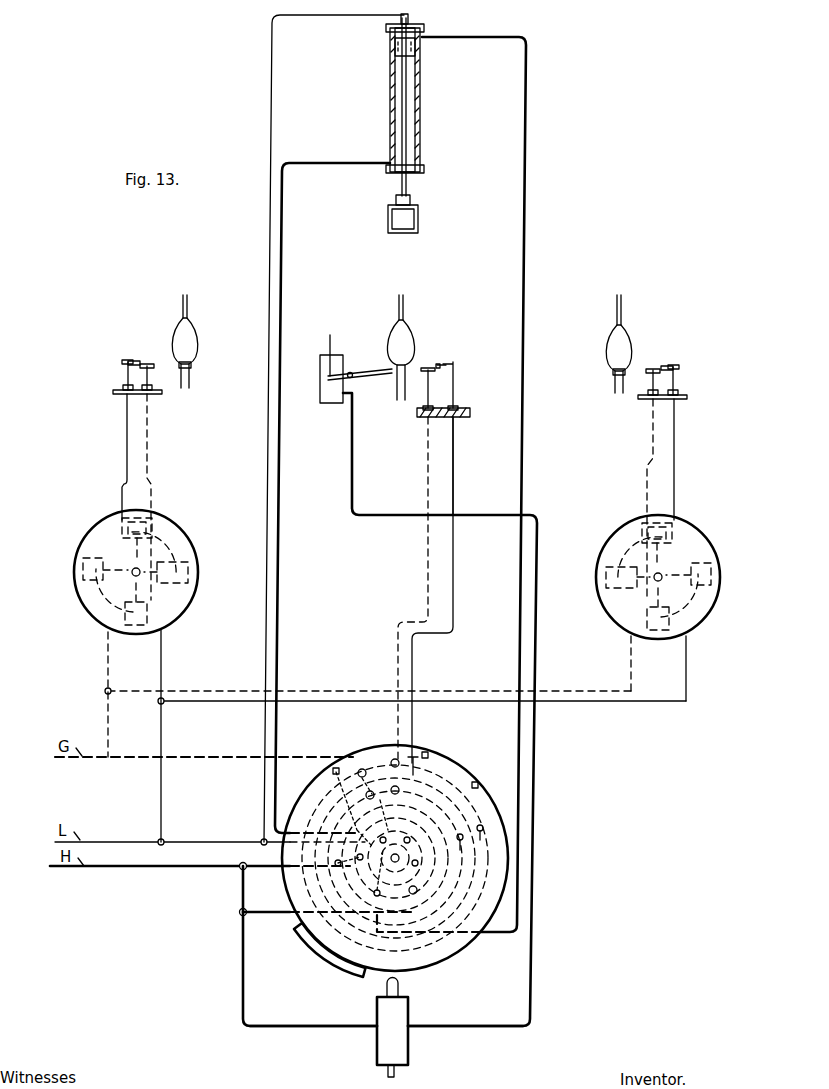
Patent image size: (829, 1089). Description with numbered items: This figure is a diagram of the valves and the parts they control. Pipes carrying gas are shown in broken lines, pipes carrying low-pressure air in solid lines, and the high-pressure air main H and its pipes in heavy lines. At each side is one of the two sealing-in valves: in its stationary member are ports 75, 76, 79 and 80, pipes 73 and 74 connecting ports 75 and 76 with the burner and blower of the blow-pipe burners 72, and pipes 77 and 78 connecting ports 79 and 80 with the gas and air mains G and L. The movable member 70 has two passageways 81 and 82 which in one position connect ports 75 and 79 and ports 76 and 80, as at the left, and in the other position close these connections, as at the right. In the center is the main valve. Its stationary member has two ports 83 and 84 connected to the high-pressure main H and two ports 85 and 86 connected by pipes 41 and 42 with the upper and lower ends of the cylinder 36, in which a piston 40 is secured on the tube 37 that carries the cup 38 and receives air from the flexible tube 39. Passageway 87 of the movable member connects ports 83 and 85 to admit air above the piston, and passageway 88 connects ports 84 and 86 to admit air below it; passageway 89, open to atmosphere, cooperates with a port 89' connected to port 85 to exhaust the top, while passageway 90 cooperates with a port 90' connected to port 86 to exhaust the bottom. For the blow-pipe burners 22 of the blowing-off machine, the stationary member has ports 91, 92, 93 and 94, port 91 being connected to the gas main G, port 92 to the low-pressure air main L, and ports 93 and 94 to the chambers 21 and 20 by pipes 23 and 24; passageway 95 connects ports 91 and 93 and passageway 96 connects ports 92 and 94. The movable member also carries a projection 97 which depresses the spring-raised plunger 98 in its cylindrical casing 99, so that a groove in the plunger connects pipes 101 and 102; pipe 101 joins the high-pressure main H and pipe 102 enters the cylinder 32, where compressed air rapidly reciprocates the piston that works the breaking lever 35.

The chamber 20 is at (452, 420).
The chamber 21 is at (425, 420).
The blow-pipe burners 22 is at (437, 362).
The pipe 23 is at (396, 655).
The pipe 24 is at (413, 660).
The cylinder 32 is at (322, 390).
The breaking lever 35 is at (383, 376).
The cylinder 36 is at (422, 130).
The tube 37 is at (407, 108).
The cup 38 is at (420, 215).
The flexible tube 39 is at (265, 505).
The piston 40 is at (418, 50).
The pipe 41 is at (528, 105).
The pipe 42 is at (345, 163).
The movable valve-member 70 is at (197, 600).
The blow-pipe burners 72 is at (147, 364).
The pipe 73 is at (153, 468).
The pipe 74 is at (126, 455).
The port 75 is at (403, 603).
The port 76 is at (403, 545).
The pipe 77 is at (107, 655).
The pipe 78 is at (163, 656).
The port 79 is at (397, 564).
The port 80 is at (412, 582).
The passageway 81 is at (96, 598).
The passageway 82 is at (175, 548).
The port 83 is at (420, 884).
The port 84 is at (344, 853).
The port 85 is at (377, 873).
The port 86 is at (353, 828).
The passageway 87 is at (371, 857).
The passageway 88 is at (420, 845).
The passageway 89 is at (393, 847).
The port 89' is at (402, 870).
The passageway 90 is at (450, 771).
The port 90' is at (327, 783).
The port 91 is at (373, 774).
The port 92 is at (382, 801).
The port 93 is at (413, 768).
The port 94 is at (412, 795).
The passageway 95 is at (477, 823).
The passageway 96 is at (457, 834).
The projection 97 is at (343, 975).
The plunger 98 is at (400, 989).
The cylindrical casing 99 is at (392, 1037).
The pipe 101 is at (326, 1028).
The pipe 102 is at (438, 1030).